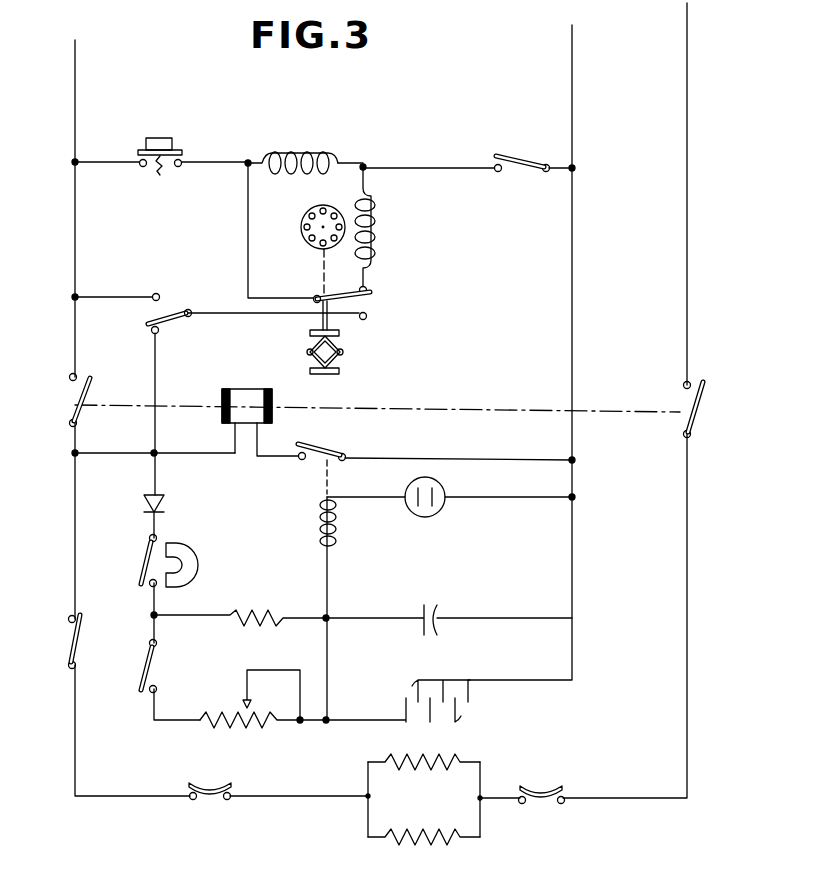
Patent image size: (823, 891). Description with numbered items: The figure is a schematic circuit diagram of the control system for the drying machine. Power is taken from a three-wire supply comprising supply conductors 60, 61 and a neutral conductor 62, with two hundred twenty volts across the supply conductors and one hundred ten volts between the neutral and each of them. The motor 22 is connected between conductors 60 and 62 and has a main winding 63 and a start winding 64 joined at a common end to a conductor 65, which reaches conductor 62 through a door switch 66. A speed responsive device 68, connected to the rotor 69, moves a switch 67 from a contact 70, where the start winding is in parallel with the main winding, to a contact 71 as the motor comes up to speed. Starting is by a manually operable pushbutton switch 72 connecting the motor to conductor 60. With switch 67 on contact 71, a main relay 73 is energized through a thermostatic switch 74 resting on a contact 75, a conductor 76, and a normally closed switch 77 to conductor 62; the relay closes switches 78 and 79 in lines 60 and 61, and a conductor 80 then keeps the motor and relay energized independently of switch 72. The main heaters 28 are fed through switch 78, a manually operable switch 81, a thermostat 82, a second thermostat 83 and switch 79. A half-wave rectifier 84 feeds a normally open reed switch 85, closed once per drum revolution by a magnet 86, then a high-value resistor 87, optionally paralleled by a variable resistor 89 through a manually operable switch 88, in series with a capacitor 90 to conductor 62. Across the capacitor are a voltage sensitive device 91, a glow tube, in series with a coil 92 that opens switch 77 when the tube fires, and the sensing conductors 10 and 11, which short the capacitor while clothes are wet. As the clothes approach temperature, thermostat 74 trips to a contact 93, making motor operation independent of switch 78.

The conductor 10 is at (435, 680).
The conductor 11 is at (430, 725).
The motor 22 is at (314, 141).
The main heaters 28 is at (428, 807).
The supply conductor 60 is at (75, 72).
The supply conductor 61 is at (687, 72).
The neutral conductor 62 is at (572, 78).
The main winding 63 is at (336, 152).
The start winding 64 is at (378, 218).
The conductor 65 is at (428, 168).
The door switch 66 is at (518, 158).
The switch 67 is at (355, 300).
The speed responsive device 68 is at (343, 355).
The rotor 69 is at (301, 225).
The contact 70 is at (366, 287).
The contact 71 is at (366, 319).
The pushbutton switch 72 is at (164, 136).
The main relay 73 is at (240, 390).
The thermostatic switch 74 is at (168, 313).
The contact 75 is at (158, 333).
The conductor 76 is at (155, 392).
The switch 77 is at (318, 445).
The switch 78 is at (78, 400).
The switch 79 is at (697, 410).
The conductor 80 is at (138, 455).
The manually operable switch 81 is at (80, 640).
The thermostat 82 is at (210, 800).
The second thermostat 83 is at (542, 802).
The half-wave rectifier 84 is at (142, 503).
The switch 85 is at (142, 557).
The magnet 86 is at (198, 565).
The resistor 87 is at (233, 610).
The manually operable switch 88 is at (158, 663).
The variable resistor 89 is at (203, 712).
The capacitor 90 is at (430, 605).
The voltage sensitive device 91 is at (444, 490).
The coil 92 is at (318, 515).
The contact 93 is at (154, 293).